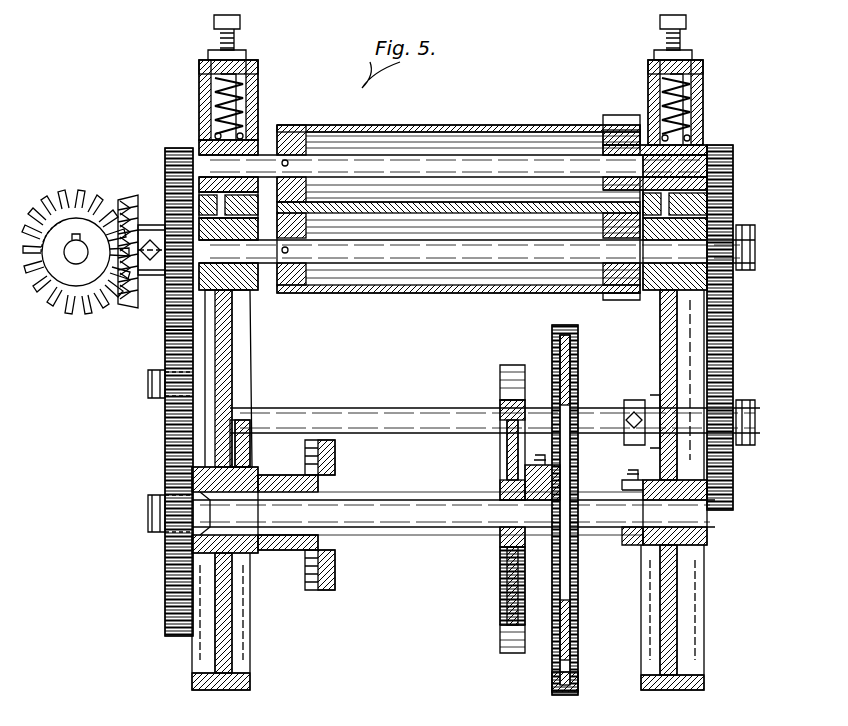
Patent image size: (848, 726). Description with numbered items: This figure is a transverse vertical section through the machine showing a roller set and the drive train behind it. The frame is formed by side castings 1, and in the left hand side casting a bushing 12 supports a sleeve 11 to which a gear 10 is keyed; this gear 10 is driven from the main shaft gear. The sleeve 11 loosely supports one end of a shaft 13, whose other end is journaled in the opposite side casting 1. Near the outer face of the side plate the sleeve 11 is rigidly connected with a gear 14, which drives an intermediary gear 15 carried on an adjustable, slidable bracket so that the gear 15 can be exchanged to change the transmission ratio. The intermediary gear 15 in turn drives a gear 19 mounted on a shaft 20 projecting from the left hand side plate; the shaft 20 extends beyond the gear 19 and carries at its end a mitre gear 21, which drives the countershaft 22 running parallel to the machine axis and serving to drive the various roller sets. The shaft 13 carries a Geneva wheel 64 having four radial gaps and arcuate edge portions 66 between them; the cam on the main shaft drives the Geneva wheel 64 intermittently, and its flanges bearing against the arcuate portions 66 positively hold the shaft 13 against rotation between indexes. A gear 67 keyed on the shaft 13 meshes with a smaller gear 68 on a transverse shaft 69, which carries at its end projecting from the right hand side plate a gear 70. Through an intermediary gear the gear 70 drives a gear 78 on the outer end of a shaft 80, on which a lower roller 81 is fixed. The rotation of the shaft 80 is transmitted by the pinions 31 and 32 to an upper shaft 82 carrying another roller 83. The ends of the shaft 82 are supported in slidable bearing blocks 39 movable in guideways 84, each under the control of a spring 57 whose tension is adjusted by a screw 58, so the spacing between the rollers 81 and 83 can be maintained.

The side casting 1 is at (250, 568).
The gear 10 is at (336, 452).
The sleeve 11 is at (258, 478).
The bushing 12 is at (246, 465).
The shaft 13 is at (382, 498).
The gear 14 is at (168, 592).
The intermediary gear 15 is at (168, 390).
The gear 19 is at (172, 150).
The shaft 20 is at (146, 222).
The mitre gear 21 is at (127, 198).
The countershaft 22 is at (72, 258).
The pinion 31 is at (627, 300).
The pinion 32 is at (618, 124).
The bearing block 39 is at (199, 144).
The spring 57 is at (248, 132).
The screw 58 is at (238, 33).
The Geneva wheel 64 is at (498, 470).
The arcuate edge portion 66 is at (508, 392).
The gear 67 is at (552, 680).
The gear 68 is at (578, 380).
The transverse shaft 69 is at (598, 412).
The gear 70 is at (712, 502).
The gear 78 is at (733, 170).
The shaft 80 is at (384, 265).
The roller 81 is at (420, 297).
The upper shaft 82 is at (547, 155).
The roller 83 is at (516, 124).
The guideway 84 is at (250, 112).